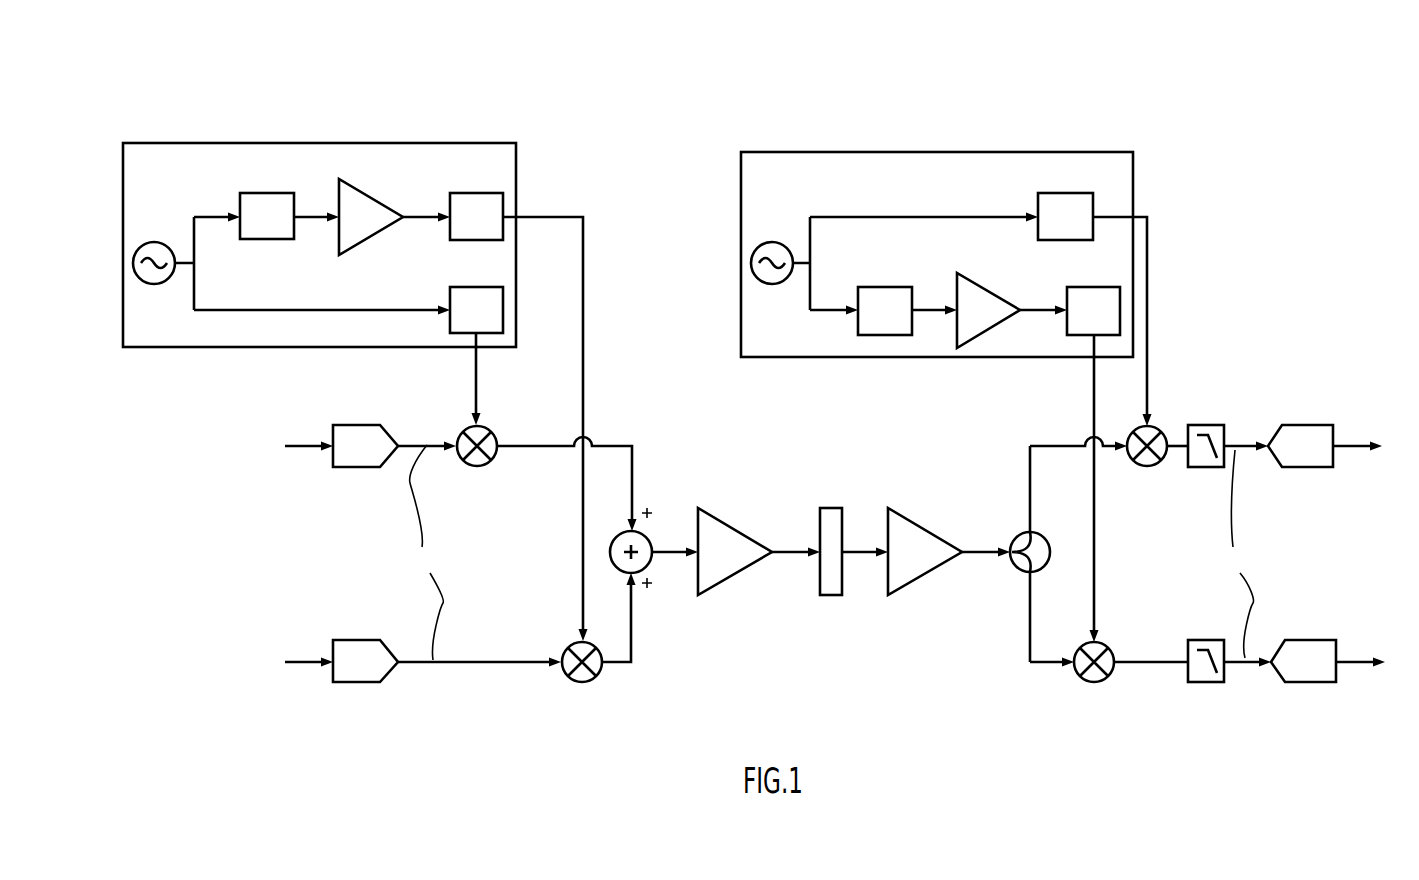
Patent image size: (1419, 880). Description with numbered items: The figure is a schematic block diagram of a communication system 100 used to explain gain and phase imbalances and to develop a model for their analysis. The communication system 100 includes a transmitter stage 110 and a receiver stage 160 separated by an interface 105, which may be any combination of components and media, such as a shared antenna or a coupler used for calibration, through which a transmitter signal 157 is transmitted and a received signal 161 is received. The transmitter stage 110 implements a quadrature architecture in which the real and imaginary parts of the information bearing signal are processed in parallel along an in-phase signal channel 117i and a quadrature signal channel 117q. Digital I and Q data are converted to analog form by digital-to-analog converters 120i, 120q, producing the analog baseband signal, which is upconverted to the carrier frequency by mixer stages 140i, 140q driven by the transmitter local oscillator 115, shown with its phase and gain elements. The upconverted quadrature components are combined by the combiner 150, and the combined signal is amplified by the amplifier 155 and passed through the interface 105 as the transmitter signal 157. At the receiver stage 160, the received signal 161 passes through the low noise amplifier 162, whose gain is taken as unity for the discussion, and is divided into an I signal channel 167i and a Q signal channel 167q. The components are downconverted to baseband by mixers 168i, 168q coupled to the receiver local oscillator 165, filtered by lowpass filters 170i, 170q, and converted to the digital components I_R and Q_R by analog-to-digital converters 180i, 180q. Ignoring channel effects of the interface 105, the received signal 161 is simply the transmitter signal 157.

The communication system 100 is at (1262, 80).
The interface 105 is at (833, 508).
The transmitter stage 110 is at (654, 120).
The transmitter local oscillator 115 is at (443, 143).
The in-phase signal channel 117i is at (336, 488).
The quadrature signal channel 117q is at (316, 589).
The digital-to-analog converter 120i is at (358, 424).
The digital-to-analog converter 120q is at (358, 640).
The mixer stage 140i is at (477, 468).
The mixer stage 140q is at (568, 641).
The combiner 150 is at (620, 570).
The amplifier 155 is at (747, 530).
The transmitter signal 157 is at (778, 555).
The receiver stage 160 is at (1282, 265).
The received signal 161 is at (858, 555).
The low noise amplifier 162 is at (927, 522).
The receiver local oscillator 165 is at (1032, 152).
The I signal channel 167i is at (1059, 429).
The Q signal channel 167q is at (1034, 676).
The mixer 168i is at (1157, 422).
The mixer 168q is at (1102, 640).
The lowpass filter 170i is at (1200, 423).
The lowpass filter 170q is at (1200, 640).
The analog-to-digital converter 180i is at (1308, 423).
The analog-to-digital converter 180q is at (1315, 640).